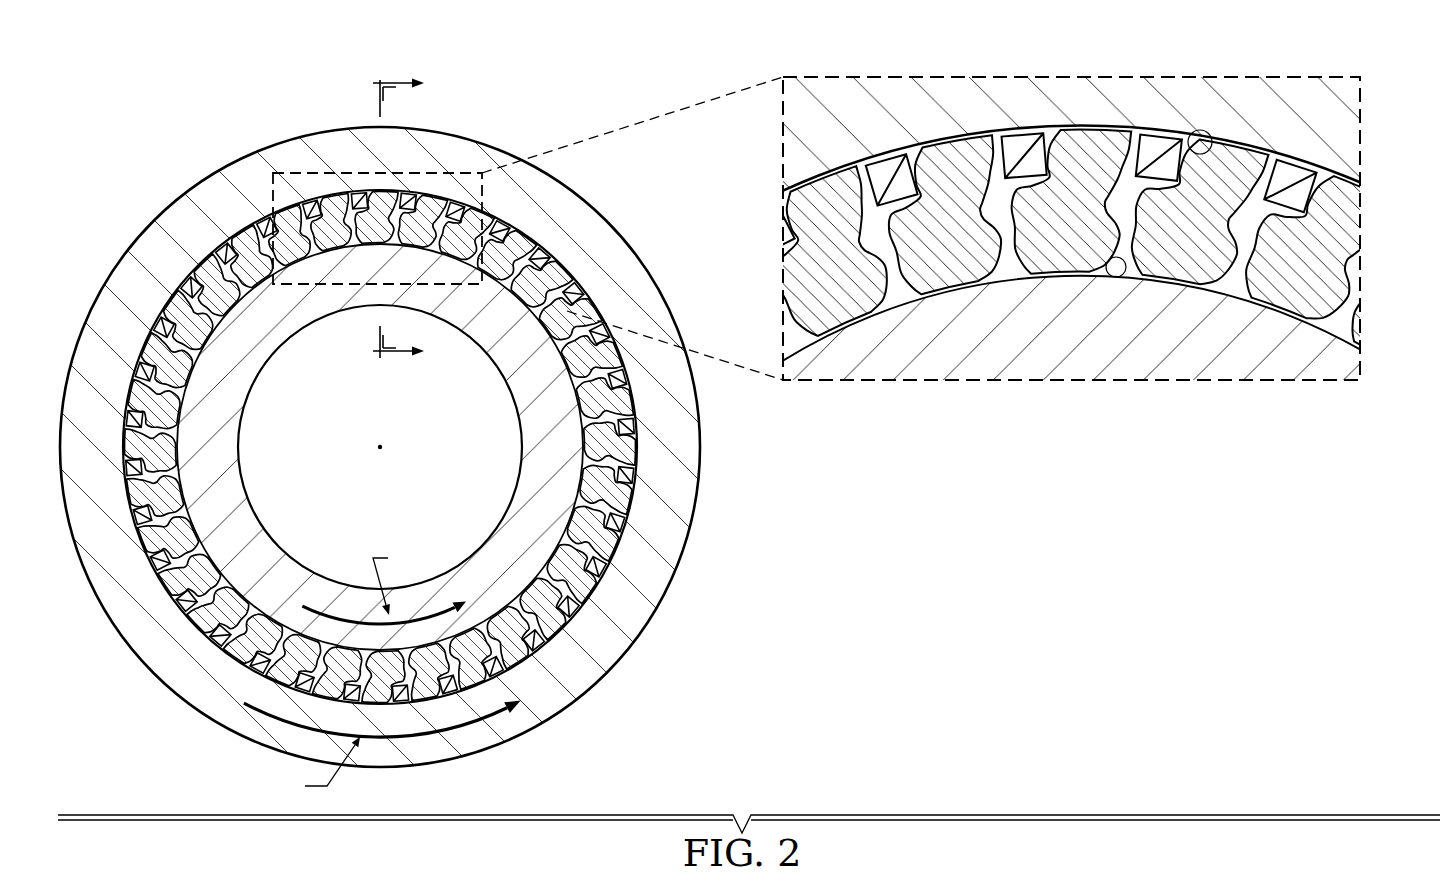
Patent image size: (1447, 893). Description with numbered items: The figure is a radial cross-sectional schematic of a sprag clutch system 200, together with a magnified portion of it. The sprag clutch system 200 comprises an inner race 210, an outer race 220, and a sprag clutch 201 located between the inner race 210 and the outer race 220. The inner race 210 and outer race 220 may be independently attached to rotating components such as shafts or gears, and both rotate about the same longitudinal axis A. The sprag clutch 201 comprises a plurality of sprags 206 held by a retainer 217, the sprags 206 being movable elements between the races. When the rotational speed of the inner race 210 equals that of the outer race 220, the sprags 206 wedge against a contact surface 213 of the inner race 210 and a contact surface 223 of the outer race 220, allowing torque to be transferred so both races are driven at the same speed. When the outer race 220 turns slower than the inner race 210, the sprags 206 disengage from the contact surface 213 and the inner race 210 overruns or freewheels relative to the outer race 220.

The sprag clutch system 200 is at (256, 100).
The sprag clutch 201 is at (662, 488).
The sprags 206 is at (172, 306).
The inner race 210 is at (303, 318).
The contact surface 213 is at (1114, 277).
The retainer 217 is at (1026, 138).
The outer race 220 is at (228, 178).
The contact surface 223 is at (1210, 135).